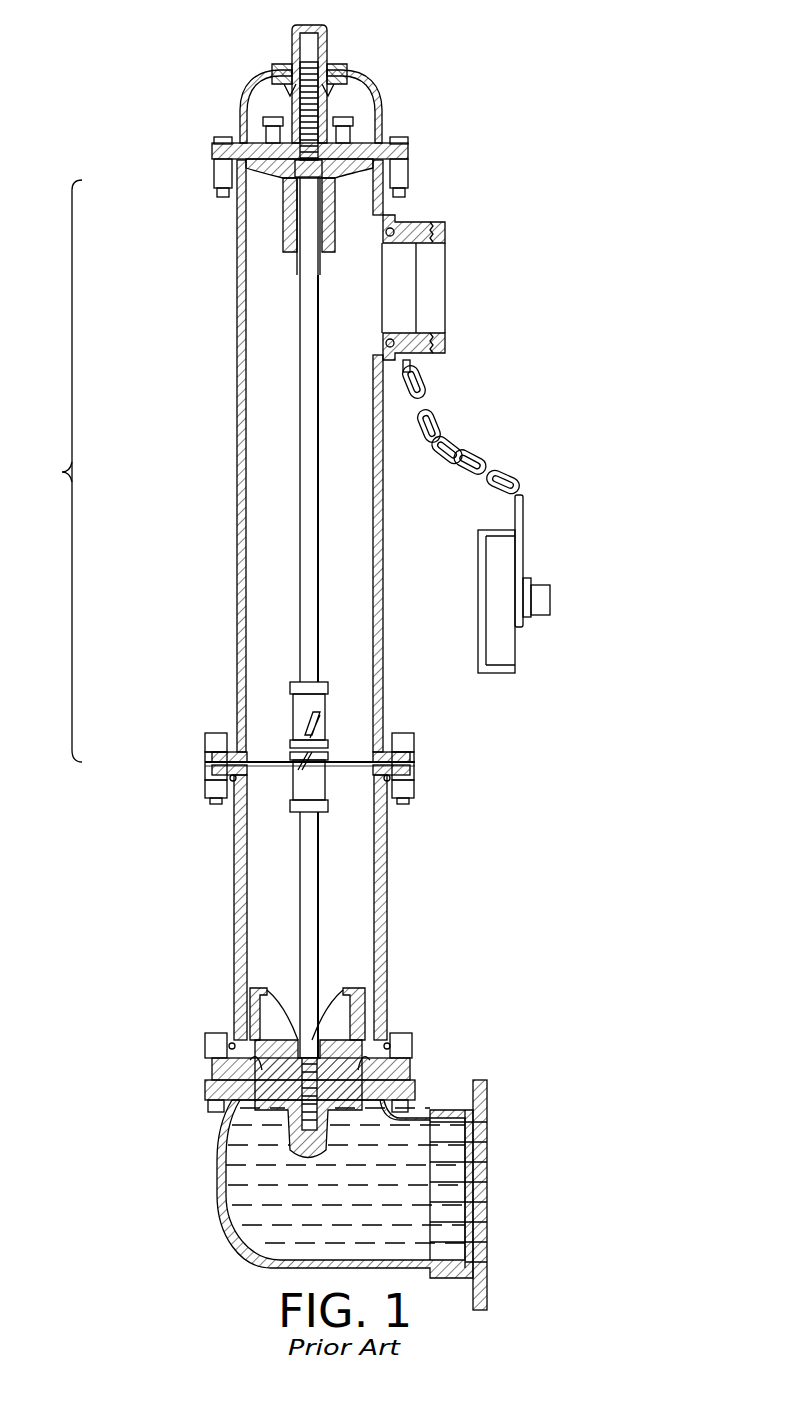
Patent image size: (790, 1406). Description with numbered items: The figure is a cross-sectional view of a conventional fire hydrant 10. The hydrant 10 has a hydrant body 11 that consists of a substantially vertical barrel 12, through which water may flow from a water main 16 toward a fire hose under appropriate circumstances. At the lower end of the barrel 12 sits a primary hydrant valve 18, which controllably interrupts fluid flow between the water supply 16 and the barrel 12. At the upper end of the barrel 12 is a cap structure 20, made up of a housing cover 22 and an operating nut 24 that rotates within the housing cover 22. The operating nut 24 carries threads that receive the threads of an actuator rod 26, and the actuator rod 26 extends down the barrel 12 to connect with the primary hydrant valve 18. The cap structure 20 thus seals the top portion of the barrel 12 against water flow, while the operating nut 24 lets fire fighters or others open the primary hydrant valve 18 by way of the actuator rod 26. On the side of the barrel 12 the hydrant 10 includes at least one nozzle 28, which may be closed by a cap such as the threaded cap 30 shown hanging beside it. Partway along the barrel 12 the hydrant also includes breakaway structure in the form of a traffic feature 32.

The fire hydrant 10 is at (452, 86).
The hydrant body 11 is at (54, 471).
The barrel 12 is at (237, 238).
The water main 16 is at (580, 1195).
The primary hydrant valve 18 is at (355, 1032).
The cap structure 20 is at (385, 86).
The housing cover 22 is at (405, 155).
The operating nut 24 is at (292, 45).
The actuator rod 26 is at (300, 300).
The nozzle 28 is at (445, 238).
The threaded cap 30 is at (550, 602).
The traffic feature 32 is at (210, 760).